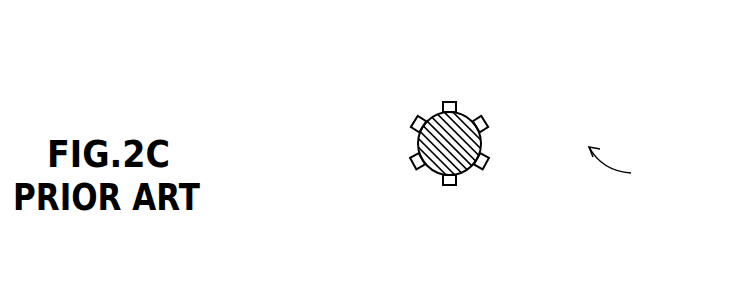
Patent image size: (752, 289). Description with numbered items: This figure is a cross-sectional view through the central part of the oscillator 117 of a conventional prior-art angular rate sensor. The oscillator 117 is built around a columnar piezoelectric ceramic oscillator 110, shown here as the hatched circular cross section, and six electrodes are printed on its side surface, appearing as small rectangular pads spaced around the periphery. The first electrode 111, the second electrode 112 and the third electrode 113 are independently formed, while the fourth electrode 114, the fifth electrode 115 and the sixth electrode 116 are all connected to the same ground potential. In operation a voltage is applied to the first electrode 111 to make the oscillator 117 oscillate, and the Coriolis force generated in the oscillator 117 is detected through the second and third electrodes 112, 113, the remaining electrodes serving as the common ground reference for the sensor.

The columnar piezoelectric ceramic oscillator 110 is at (433, 168).
The first electrode 111 is at (453, 183).
The second electrode 112 is at (487, 125).
The third electrode 113 is at (415, 124).
The fourth electrode 114 is at (445, 102).
The fifth electrode 115 is at (415, 159).
The sixth electrode 116 is at (487, 159).
The oscillator 117 is at (663, 190).